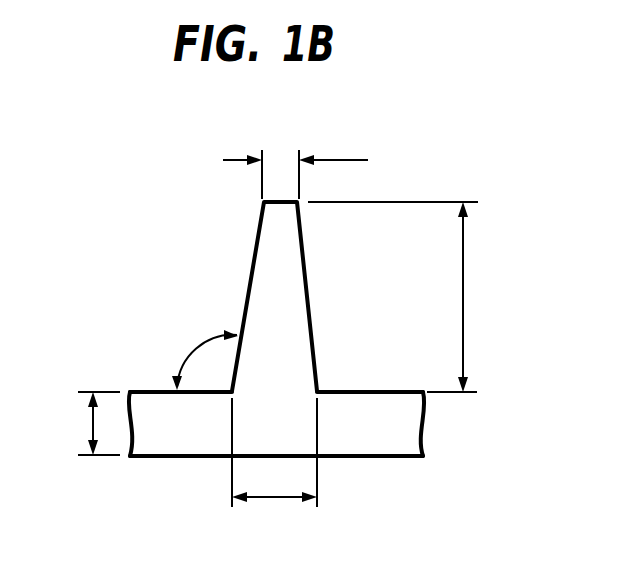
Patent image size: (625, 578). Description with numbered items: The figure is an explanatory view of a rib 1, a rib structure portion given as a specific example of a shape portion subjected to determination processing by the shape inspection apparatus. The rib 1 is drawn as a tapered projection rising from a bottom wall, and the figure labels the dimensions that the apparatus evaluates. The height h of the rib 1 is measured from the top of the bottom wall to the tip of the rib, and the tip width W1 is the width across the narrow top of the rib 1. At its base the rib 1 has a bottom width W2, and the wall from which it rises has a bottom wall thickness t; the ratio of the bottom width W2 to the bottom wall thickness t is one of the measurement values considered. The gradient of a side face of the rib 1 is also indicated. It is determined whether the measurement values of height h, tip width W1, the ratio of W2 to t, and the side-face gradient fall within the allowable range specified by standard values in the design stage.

The rib 1 is at (247, 254).
The tip width W1 is at (295, 161).
The bottom width W2 is at (274, 467).
The height h is at (399, 297).
The bottom wall thickness t is at (95, 423).